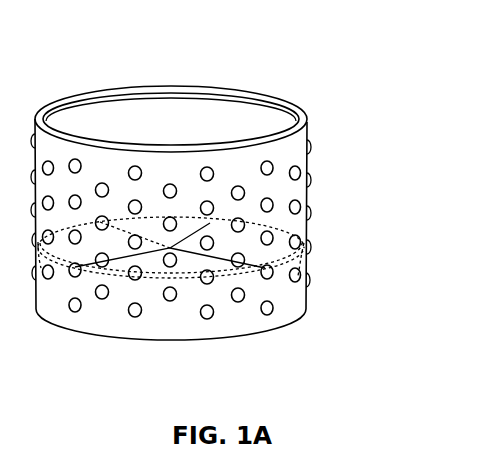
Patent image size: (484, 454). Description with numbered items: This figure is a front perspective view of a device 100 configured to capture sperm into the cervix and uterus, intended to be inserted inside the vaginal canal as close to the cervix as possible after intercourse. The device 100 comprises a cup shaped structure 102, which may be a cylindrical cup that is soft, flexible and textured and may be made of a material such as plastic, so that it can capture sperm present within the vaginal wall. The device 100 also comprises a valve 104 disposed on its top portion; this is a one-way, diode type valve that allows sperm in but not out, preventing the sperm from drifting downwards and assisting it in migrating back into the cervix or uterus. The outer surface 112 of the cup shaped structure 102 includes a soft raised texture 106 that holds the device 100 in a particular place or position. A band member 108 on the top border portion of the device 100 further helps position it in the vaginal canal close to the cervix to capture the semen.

The device 100 is at (313, 53).
The cup shaped structure 102 is at (307, 165).
The valve 104 is at (312, 212).
The soft raised texture 106 is at (307, 257).
The band member 108 is at (187, 91).
The outer surface 112 is at (288, 297).